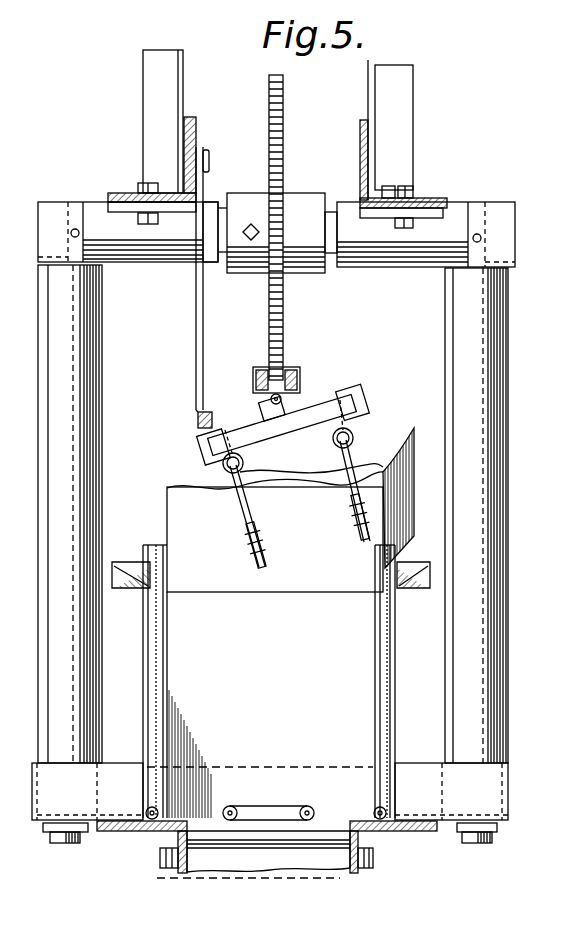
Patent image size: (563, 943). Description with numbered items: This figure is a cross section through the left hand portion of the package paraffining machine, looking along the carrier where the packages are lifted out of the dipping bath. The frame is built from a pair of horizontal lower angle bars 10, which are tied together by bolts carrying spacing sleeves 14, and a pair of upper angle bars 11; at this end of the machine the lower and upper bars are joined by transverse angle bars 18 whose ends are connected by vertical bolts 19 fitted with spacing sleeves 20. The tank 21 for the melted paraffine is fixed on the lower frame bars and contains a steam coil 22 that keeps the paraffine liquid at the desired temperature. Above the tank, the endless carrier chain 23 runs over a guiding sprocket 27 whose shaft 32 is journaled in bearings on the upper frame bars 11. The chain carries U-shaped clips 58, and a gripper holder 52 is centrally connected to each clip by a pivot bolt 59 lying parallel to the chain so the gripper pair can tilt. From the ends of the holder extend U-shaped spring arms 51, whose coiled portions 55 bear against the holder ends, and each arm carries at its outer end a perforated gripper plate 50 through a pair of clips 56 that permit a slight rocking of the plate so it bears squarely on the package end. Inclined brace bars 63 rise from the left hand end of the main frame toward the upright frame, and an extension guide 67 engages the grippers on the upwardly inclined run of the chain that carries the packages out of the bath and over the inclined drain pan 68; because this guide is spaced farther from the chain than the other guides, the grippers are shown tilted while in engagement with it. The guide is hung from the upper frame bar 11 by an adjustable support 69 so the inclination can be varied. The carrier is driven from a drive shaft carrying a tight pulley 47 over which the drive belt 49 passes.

The lower angle bar 10 is at (141, 830).
The upper angle bar 11 is at (196, 126).
The spacing sleeve 14 is at (292, 842).
The transverse angle bar 18 is at (497, 228).
The vertical bolt 19 is at (66, 842).
The spacing sleeve 20 is at (48, 633).
The tank 21 is at (392, 694).
The steam coil 22 is at (158, 812).
The endless chain 23 is at (284, 375).
The guiding sprocket 27 is at (284, 298).
The shaft 32 is at (224, 252).
The tight pulley 47 is at (0, 73).
The drive belt 49 is at (0, 52).
The gripper plate 50 is at (360, 522).
The spring arm 51 is at (270, 506).
The gripper holder 52 is at (296, 398).
The coiled portion 55 is at (333, 442).
The clip 56 is at (366, 514).
The U-shaped clip 58 is at (254, 381).
The pivot bolt 59 is at (270, 401).
The inclined brace bar 63 is at (368, 87).
The extension guide 67 is at (198, 426).
The drain pan 68 is at (167, 524).
The support 69 is at (196, 346).